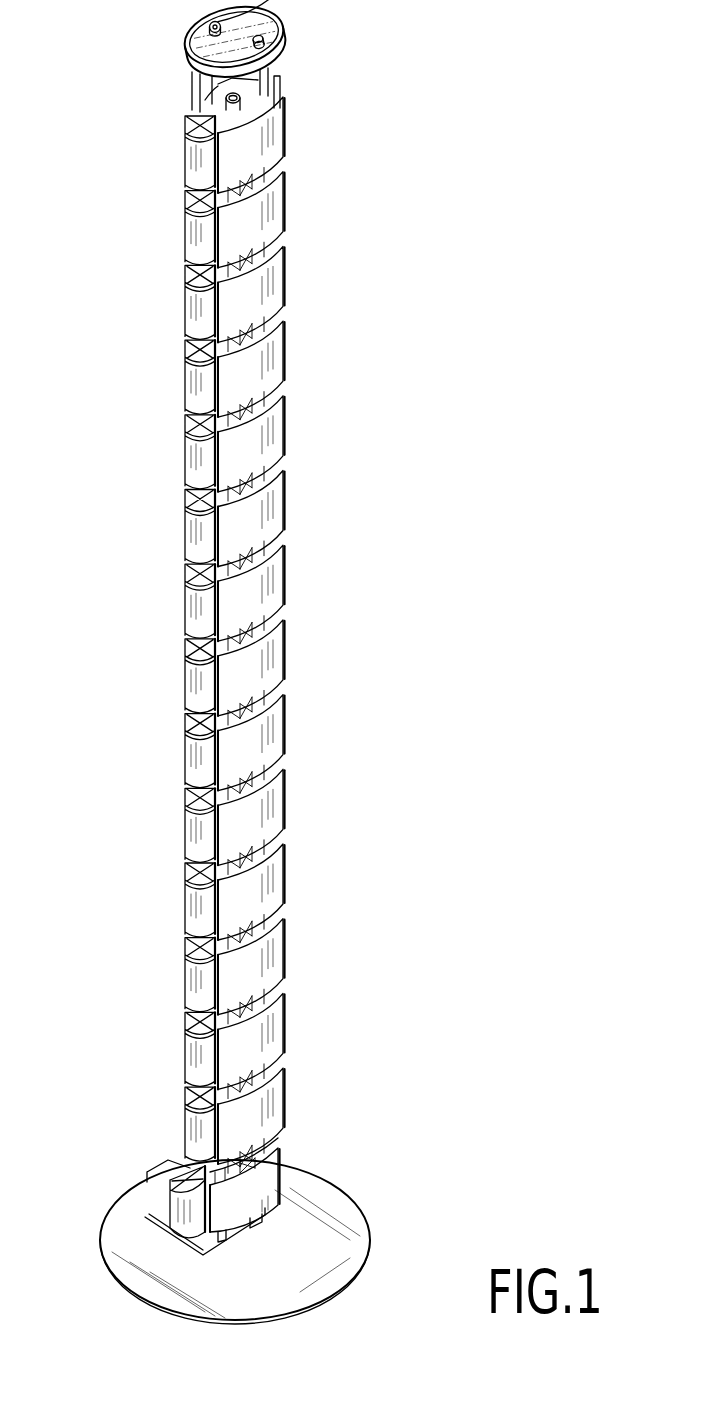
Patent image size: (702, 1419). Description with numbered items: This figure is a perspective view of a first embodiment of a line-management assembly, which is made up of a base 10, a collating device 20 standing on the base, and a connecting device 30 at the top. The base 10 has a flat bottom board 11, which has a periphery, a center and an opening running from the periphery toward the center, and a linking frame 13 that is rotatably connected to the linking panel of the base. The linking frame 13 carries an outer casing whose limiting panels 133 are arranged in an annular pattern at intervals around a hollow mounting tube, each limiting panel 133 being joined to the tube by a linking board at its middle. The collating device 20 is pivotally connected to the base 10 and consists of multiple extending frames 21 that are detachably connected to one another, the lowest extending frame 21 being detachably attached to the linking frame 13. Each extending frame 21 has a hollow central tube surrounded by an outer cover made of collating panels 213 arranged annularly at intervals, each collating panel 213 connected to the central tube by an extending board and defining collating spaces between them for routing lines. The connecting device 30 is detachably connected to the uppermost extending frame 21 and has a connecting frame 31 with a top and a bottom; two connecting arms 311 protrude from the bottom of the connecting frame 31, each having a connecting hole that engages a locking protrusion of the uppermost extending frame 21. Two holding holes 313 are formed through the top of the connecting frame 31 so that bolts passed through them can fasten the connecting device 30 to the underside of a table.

The base 10 is at (358, 1174).
The bottom board 11 is at (352, 1243).
The linking frame 13 is at (295, 1138).
The limiting panel 133 is at (185, 1200).
The collating device 20 is at (382, 637).
The extending frame 21 is at (302, 339).
The collating panel 213 is at (190, 380).
The connecting device 30 is at (310, 11).
The connecting frame 31 is at (277, 47).
The connecting arm 311 is at (277, 73).
The holding hole 313 is at (211, 25).